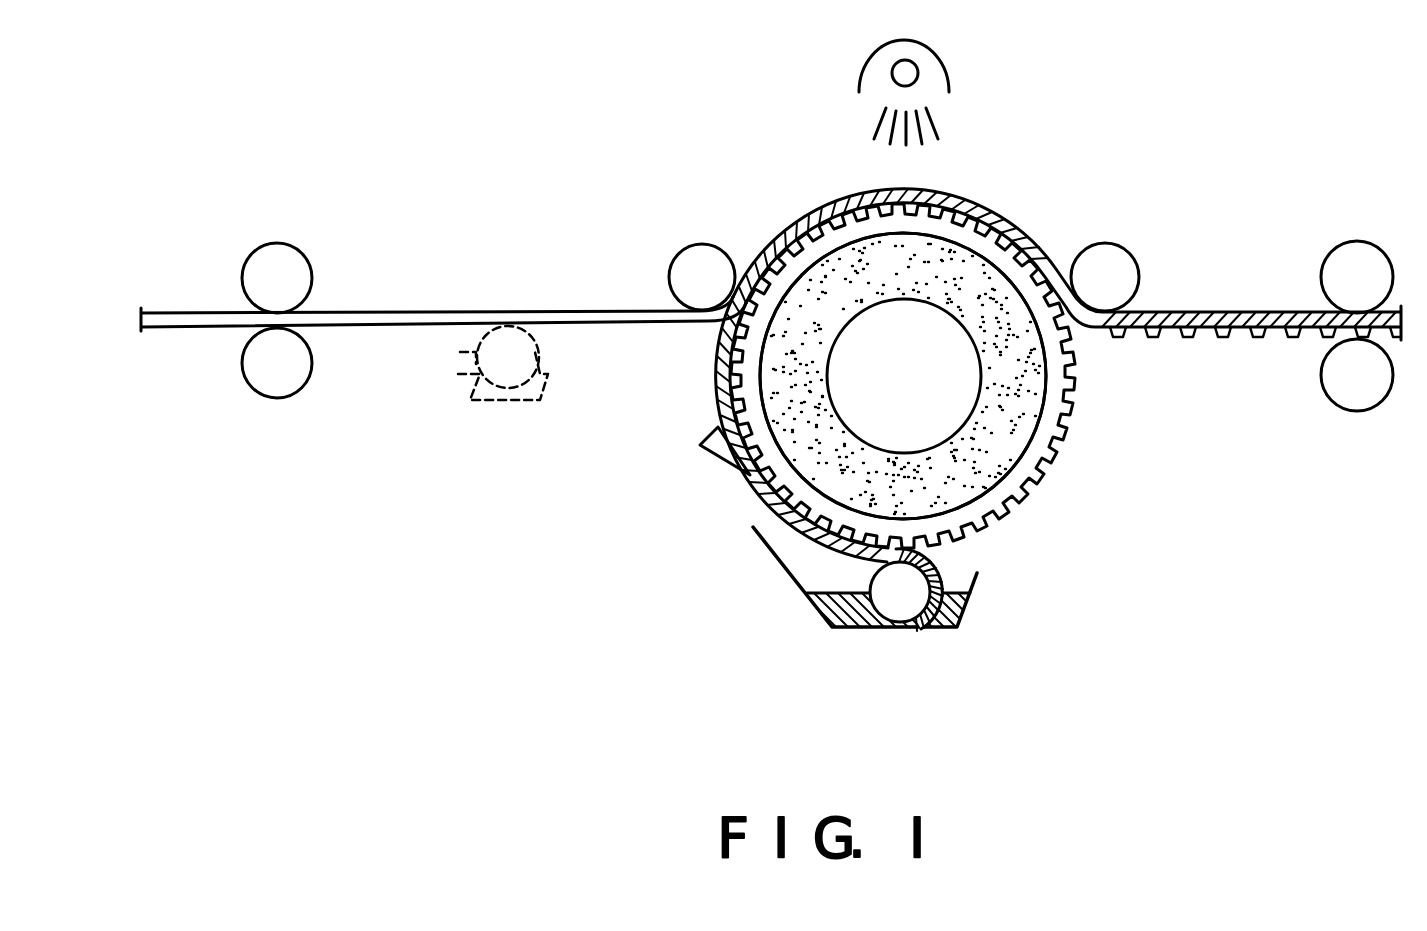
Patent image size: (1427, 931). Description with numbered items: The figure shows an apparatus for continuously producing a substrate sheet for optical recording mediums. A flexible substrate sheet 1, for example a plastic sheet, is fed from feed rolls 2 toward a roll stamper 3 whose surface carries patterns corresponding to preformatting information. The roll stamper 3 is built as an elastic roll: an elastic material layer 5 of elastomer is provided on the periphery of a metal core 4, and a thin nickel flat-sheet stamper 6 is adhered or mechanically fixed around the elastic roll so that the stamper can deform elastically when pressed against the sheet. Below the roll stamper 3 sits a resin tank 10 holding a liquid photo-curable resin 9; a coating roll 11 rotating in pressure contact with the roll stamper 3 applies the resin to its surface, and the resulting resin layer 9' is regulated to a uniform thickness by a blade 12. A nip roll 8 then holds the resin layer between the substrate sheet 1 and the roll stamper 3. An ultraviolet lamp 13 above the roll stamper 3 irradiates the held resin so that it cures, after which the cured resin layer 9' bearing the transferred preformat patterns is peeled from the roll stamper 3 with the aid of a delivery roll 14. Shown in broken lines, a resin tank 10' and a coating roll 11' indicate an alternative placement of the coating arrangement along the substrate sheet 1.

The substrate sheet 1 is at (170, 329).
The feed rolls 2 is at (285, 246).
The roll stamper 3 is at (1082, 469).
The core 4 is at (957, 386).
The elastic material layer 5 is at (990, 467).
The flat-sheet stamper 6 is at (983, 507).
The nip roll 8 is at (702, 243).
The photo-curable resin 9 is at (910, 621).
The resin layer 9' is at (1058, 410).
The resin tank 10 is at (833, 577).
The alternative developer tray 10' is at (550, 380).
The coating roll 11 is at (861, 583).
The alternative developing roller 11' is at (557, 357).
The blade 12 is at (717, 458).
The exposure lamp 13 is at (936, 58).
The delivery roll 14 is at (1122, 250).